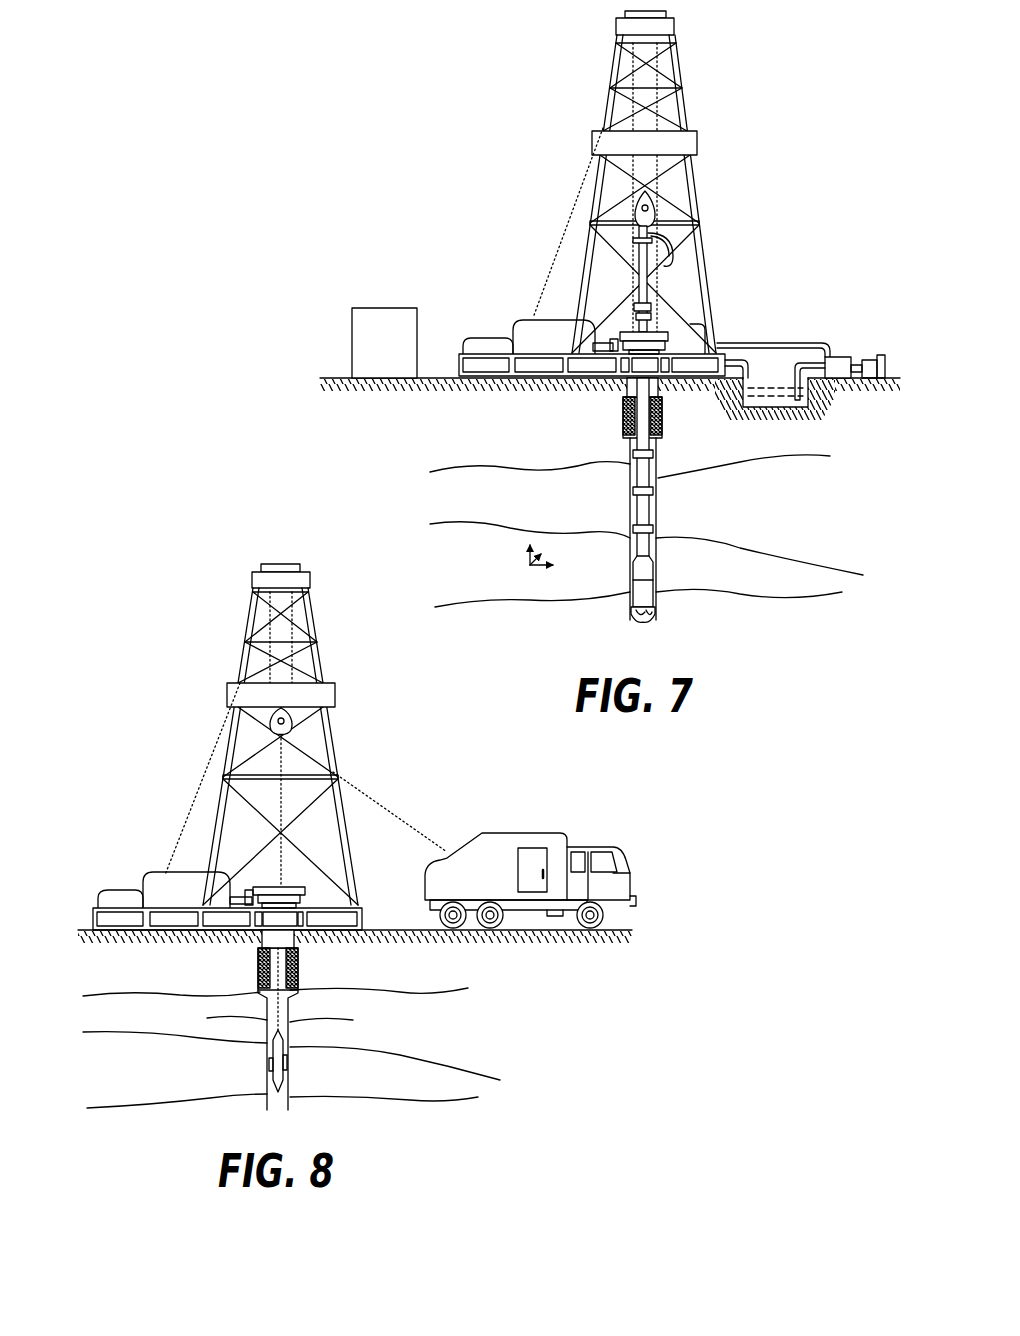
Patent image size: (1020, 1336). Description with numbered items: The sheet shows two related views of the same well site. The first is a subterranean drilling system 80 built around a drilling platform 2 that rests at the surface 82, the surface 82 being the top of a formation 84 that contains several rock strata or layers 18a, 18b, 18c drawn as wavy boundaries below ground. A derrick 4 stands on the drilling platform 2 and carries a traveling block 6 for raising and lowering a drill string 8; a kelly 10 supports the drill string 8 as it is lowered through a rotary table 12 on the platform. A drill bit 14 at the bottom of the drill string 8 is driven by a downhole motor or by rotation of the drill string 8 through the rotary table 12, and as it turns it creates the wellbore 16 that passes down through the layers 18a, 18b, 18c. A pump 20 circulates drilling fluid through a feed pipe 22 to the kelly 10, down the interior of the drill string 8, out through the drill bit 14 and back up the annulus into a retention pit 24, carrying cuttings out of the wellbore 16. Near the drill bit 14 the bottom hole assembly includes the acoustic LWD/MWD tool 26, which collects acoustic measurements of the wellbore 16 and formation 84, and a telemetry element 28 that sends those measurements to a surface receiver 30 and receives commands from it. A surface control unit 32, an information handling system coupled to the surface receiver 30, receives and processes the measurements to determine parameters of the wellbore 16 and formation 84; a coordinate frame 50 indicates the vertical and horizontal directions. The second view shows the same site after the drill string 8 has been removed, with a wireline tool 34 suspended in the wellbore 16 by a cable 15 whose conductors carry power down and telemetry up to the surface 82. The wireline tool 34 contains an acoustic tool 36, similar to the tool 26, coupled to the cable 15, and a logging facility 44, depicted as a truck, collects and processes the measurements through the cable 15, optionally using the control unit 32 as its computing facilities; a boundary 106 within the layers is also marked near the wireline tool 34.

In FIG. 7, the drilling platform 2 is at (458, 361).
In FIG. 8, the drilling platform 2 is at (362, 921).
In FIG. 7, the derrick 4 is at (685, 106).
In FIG. 8, the derrick 4 is at (345, 823).
In FIG. 7, the traveling block 6 is at (655, 205).
In FIG. 8, the traveling block 6 is at (285, 712).
In FIG. 7, the drill string 8 is at (645, 463).
In FIG. 7, the kelly 10 is at (645, 252).
In FIG. 7, the rotary table 12 is at (660, 335).
In FIG. 8, the rotary table 12 is at (298, 886).
In FIG. 7, the drill bit 14 is at (656, 620).
In FIG. 8, the cable 15 is at (277, 970).
In FIG. 7, the wellbore 16 is at (670, 476).
In FIG. 8, the wellbore 16 is at (283, 1010).
In FIG. 7, the rock strata or layers 18a is at (463, 559).
In FIG. 8, the rock strata or layers 18a is at (423, 979).
In FIG. 7, the rock strata or layers 18b is at (646, 529).
In FIG. 8, the rock strata or layers 18b is at (118, 1026).
In FIG. 7, the rock strata or layers 18c is at (773, 455).
In FIG. 8, the rock strata or layers 18c is at (118, 1097).
In FIG. 7, the pump 20 is at (830, 357).
In FIG. 7, the feed pipe 22 is at (772, 343).
In FIG. 7, the retention pit 24 is at (780, 395).
In FIG. 7, the acoustic LWD/MWD tool 26 is at (637, 587).
In FIG. 7, the telemetry element 28 is at (643, 573).
In FIG. 7, the surface receiver 30 is at (655, 305).
In FIG. 7, the surface control unit 32 is at (370, 351).
In FIG. 8, the wireline tool 34 is at (273, 1047).
In FIG. 8, the acoustic tool 36 is at (270, 1062).
In FIG. 8, the logging facility 44 is at (508, 833).
In FIG. 7, the coordinate system 50 is at (522, 557).
In FIG. 7, the drilling system 80 is at (782, 154).
In FIG. 7, the surface 82 is at (335, 378).
In FIG. 8, the surface 82 is at (84, 930).
In FIG. 7, the formation 84 is at (380, 447).
In FIG. 8, the formation 84 is at (570, 1003).
In FIG. 8, the bed boundary 106 is at (338, 1020).